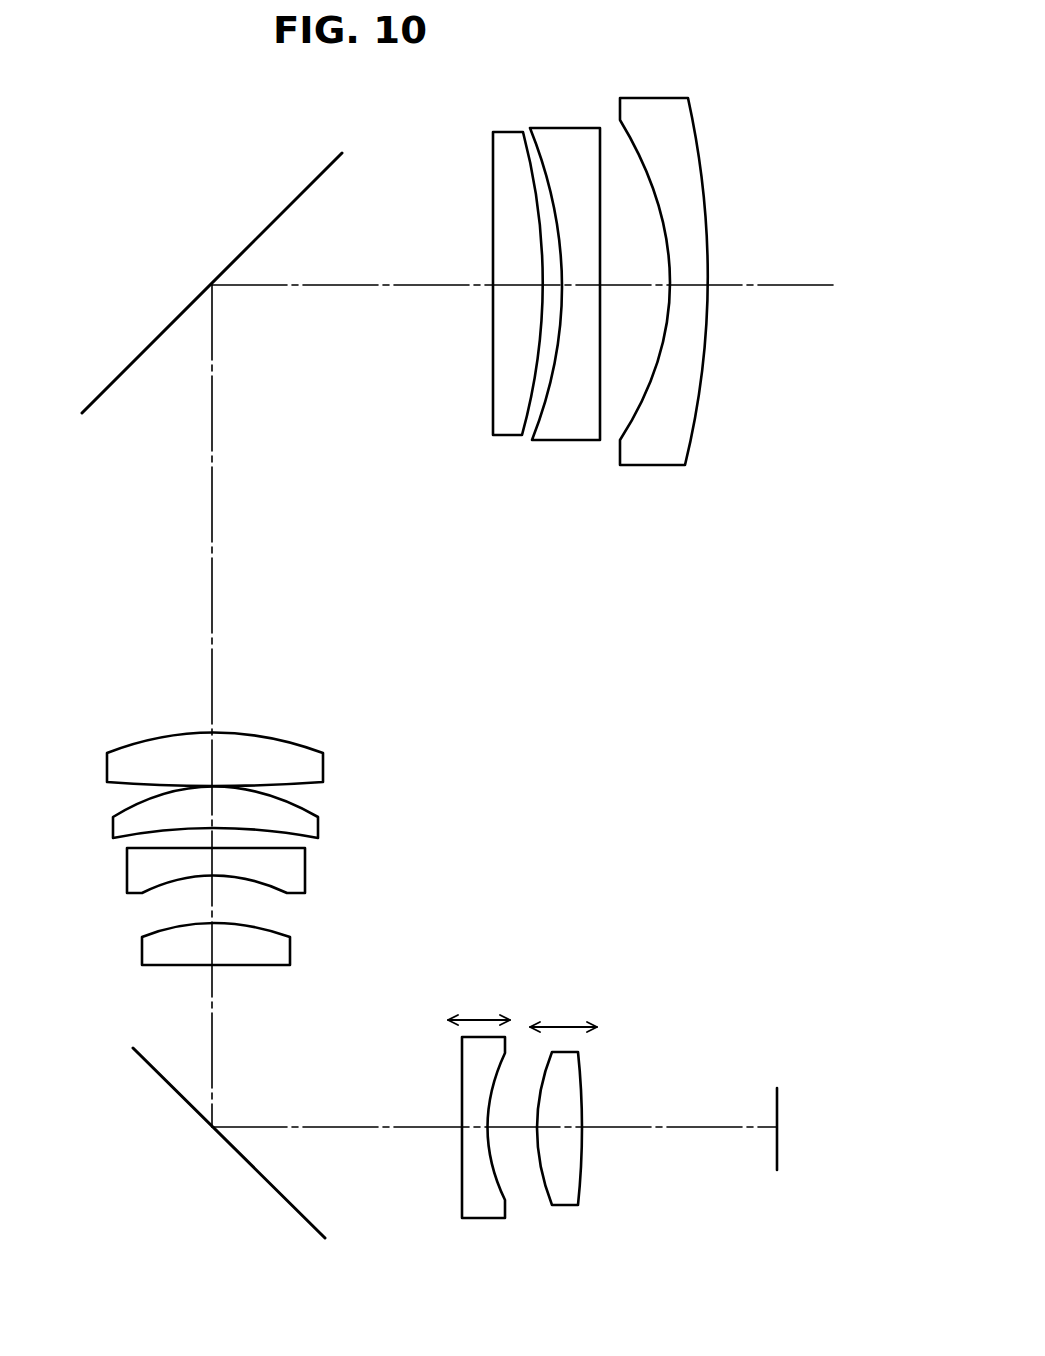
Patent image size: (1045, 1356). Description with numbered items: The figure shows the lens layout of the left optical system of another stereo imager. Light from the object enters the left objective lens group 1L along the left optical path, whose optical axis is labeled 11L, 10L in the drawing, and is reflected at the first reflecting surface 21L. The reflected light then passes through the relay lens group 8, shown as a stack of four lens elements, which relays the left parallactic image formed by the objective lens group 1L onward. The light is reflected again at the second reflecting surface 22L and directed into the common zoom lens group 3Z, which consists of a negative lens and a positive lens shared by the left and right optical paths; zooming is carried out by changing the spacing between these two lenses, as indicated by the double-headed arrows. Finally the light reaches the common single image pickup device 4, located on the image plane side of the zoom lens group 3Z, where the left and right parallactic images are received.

The left objective lens group 1L is at (711, 78).
The first reflecting surface 21L is at (273, 221).
The optical axis 11L is at (539, 706).
The optical axis 10L is at (785, 285).
The lens group 8 is at (80, 732).
The second reflecting surface 22L is at (275, 1190).
The zoom lens group 3Z is at (457, 1232).
The image pickup device 4 is at (777, 1158).